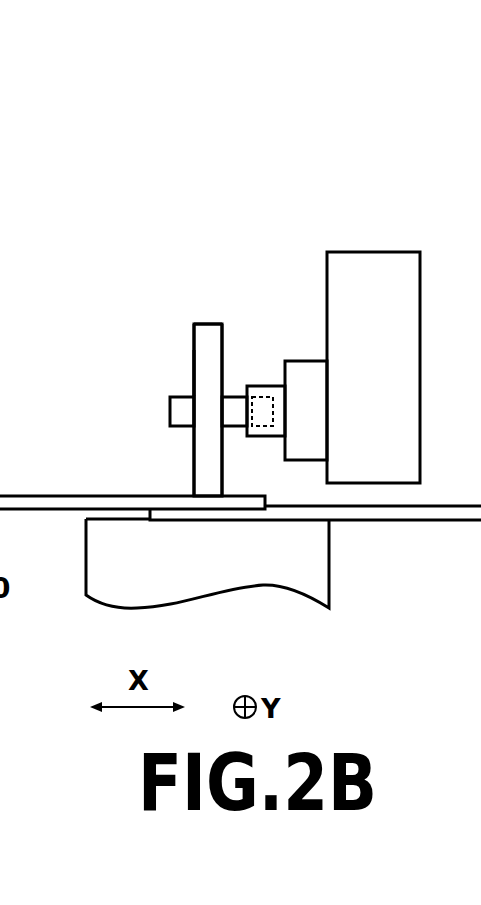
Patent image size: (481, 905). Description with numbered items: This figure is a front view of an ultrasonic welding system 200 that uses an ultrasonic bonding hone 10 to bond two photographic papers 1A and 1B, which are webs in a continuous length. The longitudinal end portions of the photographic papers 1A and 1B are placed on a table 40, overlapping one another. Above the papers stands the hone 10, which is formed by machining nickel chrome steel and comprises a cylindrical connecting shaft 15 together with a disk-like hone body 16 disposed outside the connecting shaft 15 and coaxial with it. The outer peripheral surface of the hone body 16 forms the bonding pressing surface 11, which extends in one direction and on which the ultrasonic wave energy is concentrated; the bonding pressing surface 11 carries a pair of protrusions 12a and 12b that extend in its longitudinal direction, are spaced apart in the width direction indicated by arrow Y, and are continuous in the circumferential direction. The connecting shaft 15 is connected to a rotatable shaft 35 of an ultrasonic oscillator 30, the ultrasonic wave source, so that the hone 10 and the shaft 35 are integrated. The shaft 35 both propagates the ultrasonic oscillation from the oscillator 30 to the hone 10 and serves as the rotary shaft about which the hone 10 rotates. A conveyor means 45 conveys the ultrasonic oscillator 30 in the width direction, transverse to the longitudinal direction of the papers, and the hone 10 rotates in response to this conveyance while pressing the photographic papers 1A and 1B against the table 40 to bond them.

The ultrasonic welding system 200 is at (343, 135).
The ultrasonic bonding hone 10 is at (194, 349).
The bonding pressing surface 11 is at (203, 322).
The protrusion 12a is at (223, 387).
The protrusion 12b is at (195, 323).
The connecting shaft 15 is at (234, 400).
The hone body 16 is at (193, 362).
The ultrasonic oscillator 30 is at (297, 367).
The rotatable shaft 35 is at (261, 384).
The table 40 is at (322, 572).
The conveyor means 45 is at (390, 254).
The photographic paper 1A is at (27, 495).
The photographic paper 1B is at (395, 513).